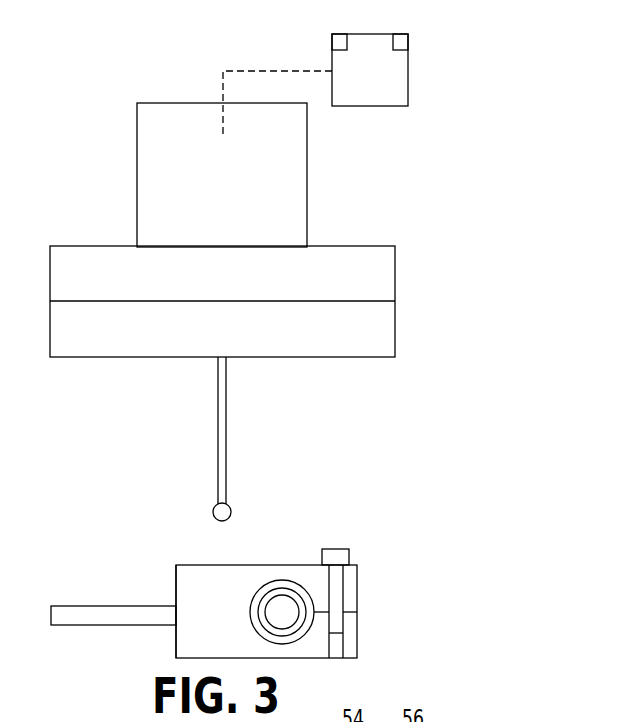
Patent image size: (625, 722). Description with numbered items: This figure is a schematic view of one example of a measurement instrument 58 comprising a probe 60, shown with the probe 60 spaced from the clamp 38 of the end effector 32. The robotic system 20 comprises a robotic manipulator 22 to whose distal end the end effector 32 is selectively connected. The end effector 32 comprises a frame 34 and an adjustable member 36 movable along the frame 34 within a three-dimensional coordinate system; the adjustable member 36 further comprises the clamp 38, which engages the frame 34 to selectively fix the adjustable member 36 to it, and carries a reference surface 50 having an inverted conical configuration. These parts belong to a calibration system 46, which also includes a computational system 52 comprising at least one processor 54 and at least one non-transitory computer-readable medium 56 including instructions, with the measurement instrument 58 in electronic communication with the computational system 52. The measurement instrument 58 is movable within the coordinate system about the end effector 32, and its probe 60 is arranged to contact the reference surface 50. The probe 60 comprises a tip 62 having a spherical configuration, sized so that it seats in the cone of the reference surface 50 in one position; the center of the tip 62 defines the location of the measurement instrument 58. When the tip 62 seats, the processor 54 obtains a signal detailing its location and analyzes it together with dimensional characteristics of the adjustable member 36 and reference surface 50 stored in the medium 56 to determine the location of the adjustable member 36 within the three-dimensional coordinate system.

The robotic system 20 is at (464, 75).
The robotic manipulator 22 is at (143, 182).
The end effector 32 is at (378, 608).
The frame 34 is at (285, 590).
The adjustable member 36 is at (95, 613).
The clamp 38 is at (180, 637).
The calibration system 46 is at (382, 402).
The reference surface 50 is at (222, 582).
The computational system 52 is at (357, 83).
The processor 54 is at (341, 40).
The non-transitory computer-readable medium 56 is at (403, 37).
The measurement instrument 58 is at (58, 338).
The probe 60 is at (228, 405).
The tip 62 is at (232, 510).